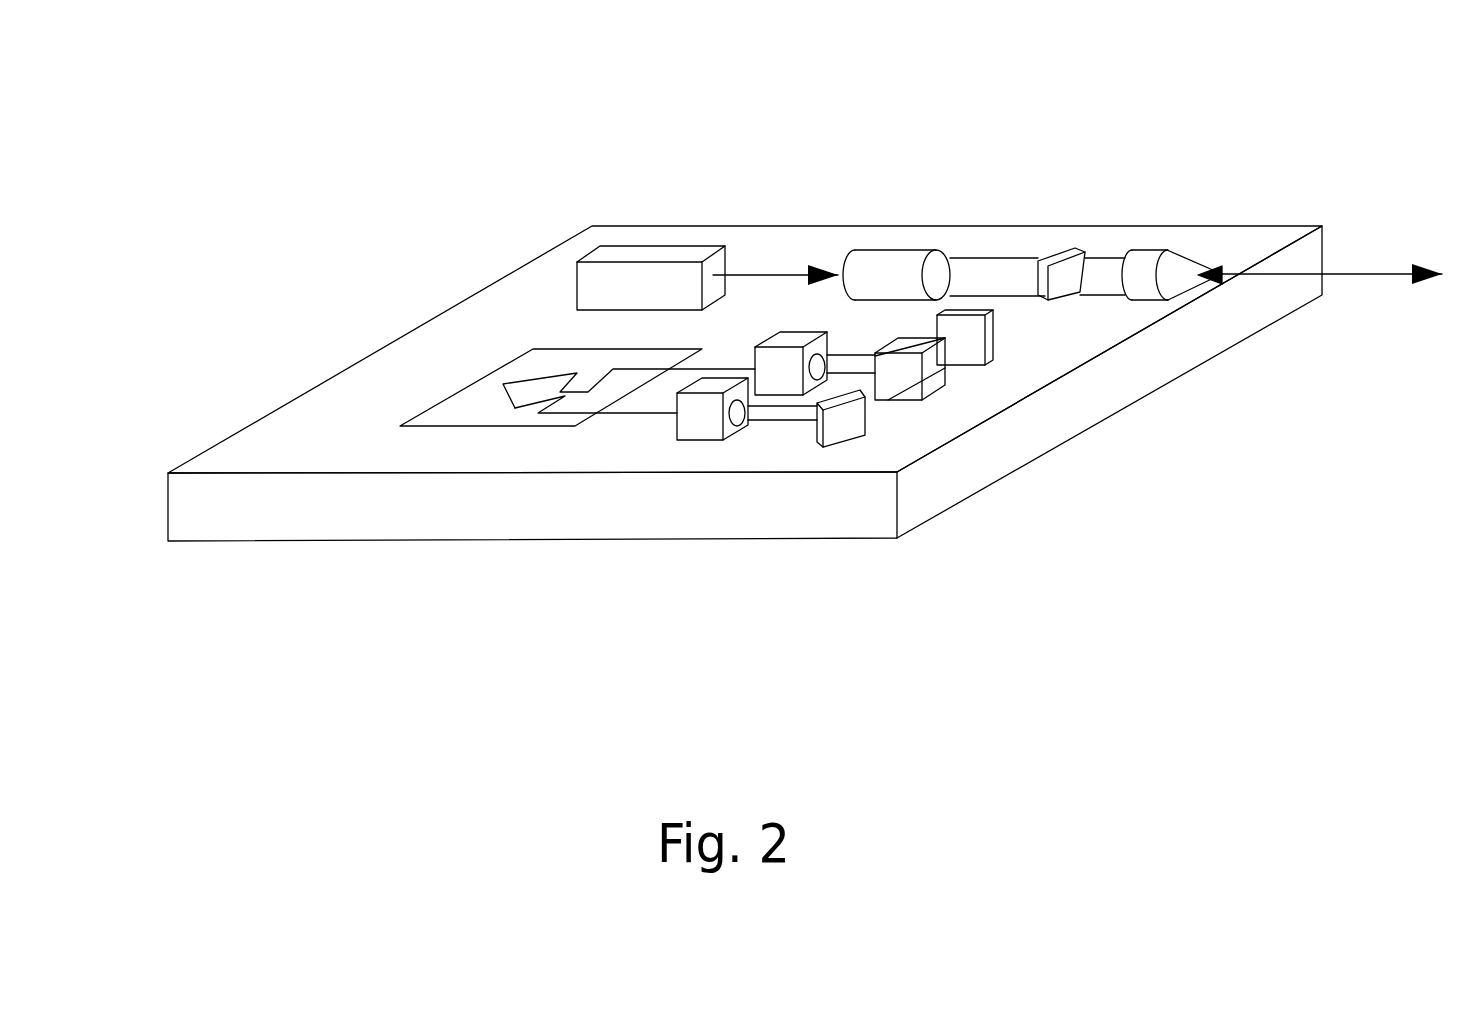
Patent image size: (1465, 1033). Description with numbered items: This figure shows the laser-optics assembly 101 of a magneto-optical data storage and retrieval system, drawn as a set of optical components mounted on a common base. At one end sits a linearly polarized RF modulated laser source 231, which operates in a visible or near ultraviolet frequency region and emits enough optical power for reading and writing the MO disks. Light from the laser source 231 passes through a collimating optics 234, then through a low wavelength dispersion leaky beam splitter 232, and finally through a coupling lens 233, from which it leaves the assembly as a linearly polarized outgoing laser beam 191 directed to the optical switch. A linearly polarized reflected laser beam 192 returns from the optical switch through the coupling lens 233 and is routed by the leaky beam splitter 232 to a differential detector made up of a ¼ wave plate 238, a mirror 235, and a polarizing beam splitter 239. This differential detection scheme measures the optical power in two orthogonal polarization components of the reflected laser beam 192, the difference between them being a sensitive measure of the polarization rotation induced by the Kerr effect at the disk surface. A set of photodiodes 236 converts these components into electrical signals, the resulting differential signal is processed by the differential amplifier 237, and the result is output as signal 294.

The laser-optics assembly 101 is at (264, 190).
The linearly polarized RF modulated laser source 231 is at (680, 243).
The collimating optics 234 is at (945, 243).
The low wavelength dispersion leaky beam splitter 232 is at (1058, 243).
The coupling lens 233 is at (1168, 243).
The reflected laser beam 192 is at (1243, 262).
The outgoing laser beam 191 is at (1385, 288).
The signal 294 is at (500, 384).
The differential amplifier 237 is at (510, 417).
The photodiodes 236 is at (785, 412).
The mirror 235 is at (873, 448).
The polarizing beam splitter 239 is at (946, 402).
The ¼ wave plate 238 is at (1002, 376).